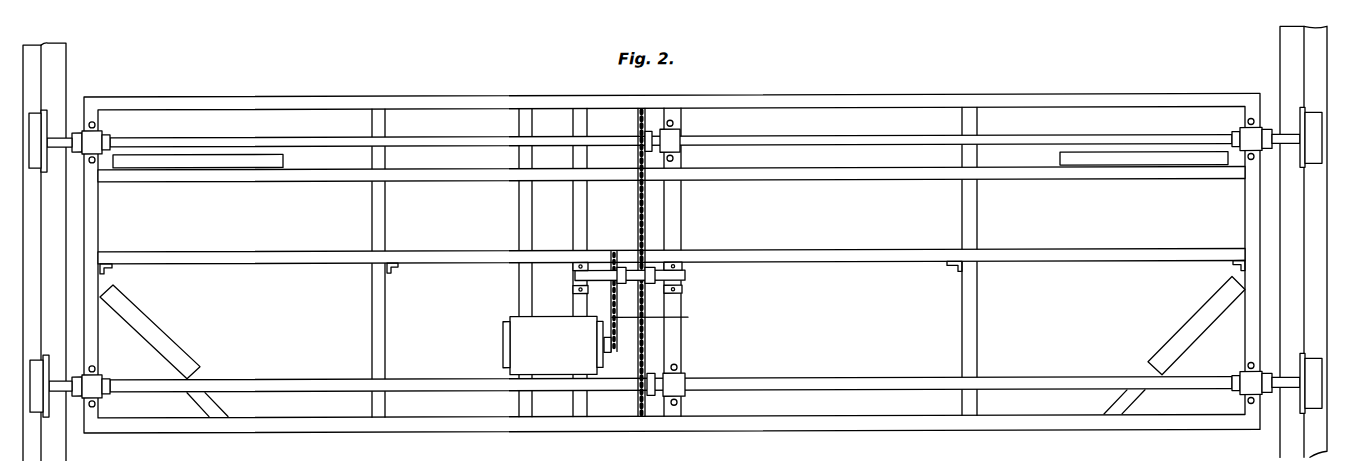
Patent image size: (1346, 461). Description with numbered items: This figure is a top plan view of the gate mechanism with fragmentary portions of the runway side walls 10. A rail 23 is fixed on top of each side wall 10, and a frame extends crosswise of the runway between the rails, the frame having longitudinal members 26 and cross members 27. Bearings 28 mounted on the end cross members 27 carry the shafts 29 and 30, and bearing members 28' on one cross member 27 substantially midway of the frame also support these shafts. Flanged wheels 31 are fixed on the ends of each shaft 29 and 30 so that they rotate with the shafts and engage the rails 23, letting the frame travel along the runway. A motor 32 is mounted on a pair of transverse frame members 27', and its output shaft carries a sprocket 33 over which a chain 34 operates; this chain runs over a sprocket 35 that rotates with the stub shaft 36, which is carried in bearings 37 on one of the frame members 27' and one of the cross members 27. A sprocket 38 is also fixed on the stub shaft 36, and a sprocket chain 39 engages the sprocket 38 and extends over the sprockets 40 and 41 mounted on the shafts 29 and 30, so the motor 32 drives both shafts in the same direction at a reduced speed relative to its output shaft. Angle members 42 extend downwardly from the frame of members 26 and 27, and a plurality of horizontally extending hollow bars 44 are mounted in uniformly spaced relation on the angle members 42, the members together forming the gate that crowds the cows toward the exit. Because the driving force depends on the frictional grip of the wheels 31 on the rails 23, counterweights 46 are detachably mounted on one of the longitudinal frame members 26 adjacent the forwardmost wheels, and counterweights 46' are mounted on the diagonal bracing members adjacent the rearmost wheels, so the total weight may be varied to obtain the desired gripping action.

The side wall 10 is at (62, 247).
The rail 23 is at (37, 82).
The longitudinal member 26 is at (1015, 99).
The cross member 27 is at (672, 262).
The transverse frame member 27' is at (568, 262).
The bearing 28 is at (672, 260).
The bearing member 28' is at (697, 259).
The shaft 29 is at (870, 381).
The shaft 30 is at (908, 147).
The flanged wheel 31 is at (43, 168).
The motor 32 is at (523, 342).
The sprocket 33 is at (605, 343).
The chain 34 is at (688, 319).
The sprocket 35 is at (620, 268).
The stub shaft 36 is at (598, 272).
The bearing 37 is at (572, 276).
The sprocket 38 is at (650, 270).
The sprocket chain 39 is at (638, 360).
The sprocket 40 is at (652, 377).
The sprocket 41 is at (652, 142).
The angle member 42 is at (110, 268).
The hollow bar 44 is at (444, 262).
The counterweight 46 is at (670, 181).
The counterweight 46' is at (672, 347).